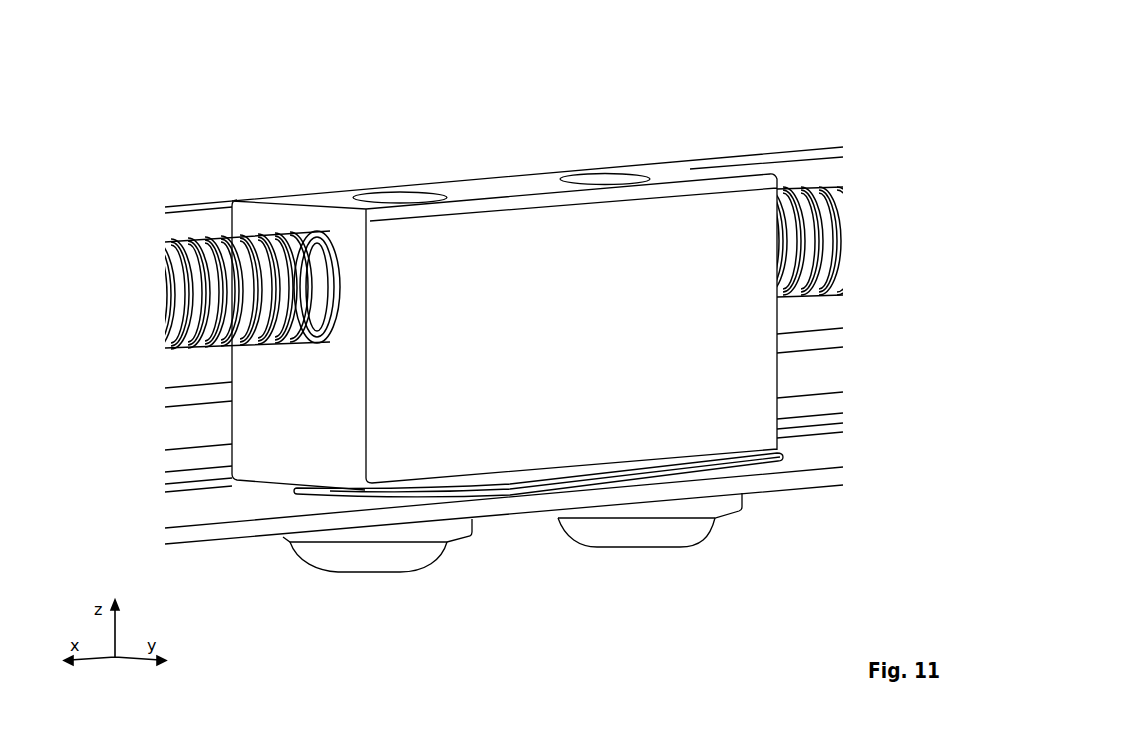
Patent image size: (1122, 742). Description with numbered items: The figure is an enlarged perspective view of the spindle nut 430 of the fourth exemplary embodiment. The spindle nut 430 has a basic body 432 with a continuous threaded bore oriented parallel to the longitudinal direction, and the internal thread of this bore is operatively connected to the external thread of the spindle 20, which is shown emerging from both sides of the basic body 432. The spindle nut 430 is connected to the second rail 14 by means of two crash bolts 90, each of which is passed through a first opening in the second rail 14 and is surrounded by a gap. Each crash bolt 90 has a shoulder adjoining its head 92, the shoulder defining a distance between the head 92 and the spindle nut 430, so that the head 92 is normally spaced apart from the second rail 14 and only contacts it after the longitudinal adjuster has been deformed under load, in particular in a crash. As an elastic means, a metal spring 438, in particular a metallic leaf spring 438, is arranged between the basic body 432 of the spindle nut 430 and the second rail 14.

The spindle nut 430 is at (506, 313).
The basic body 432 is at (505, 258).
The metal spring 438 is at (747, 463).
The spindle 20 is at (224, 258).
The second rail 14 is at (473, 508).
The crash bolts 90 is at (363, 558).
The head 92 is at (627, 538).